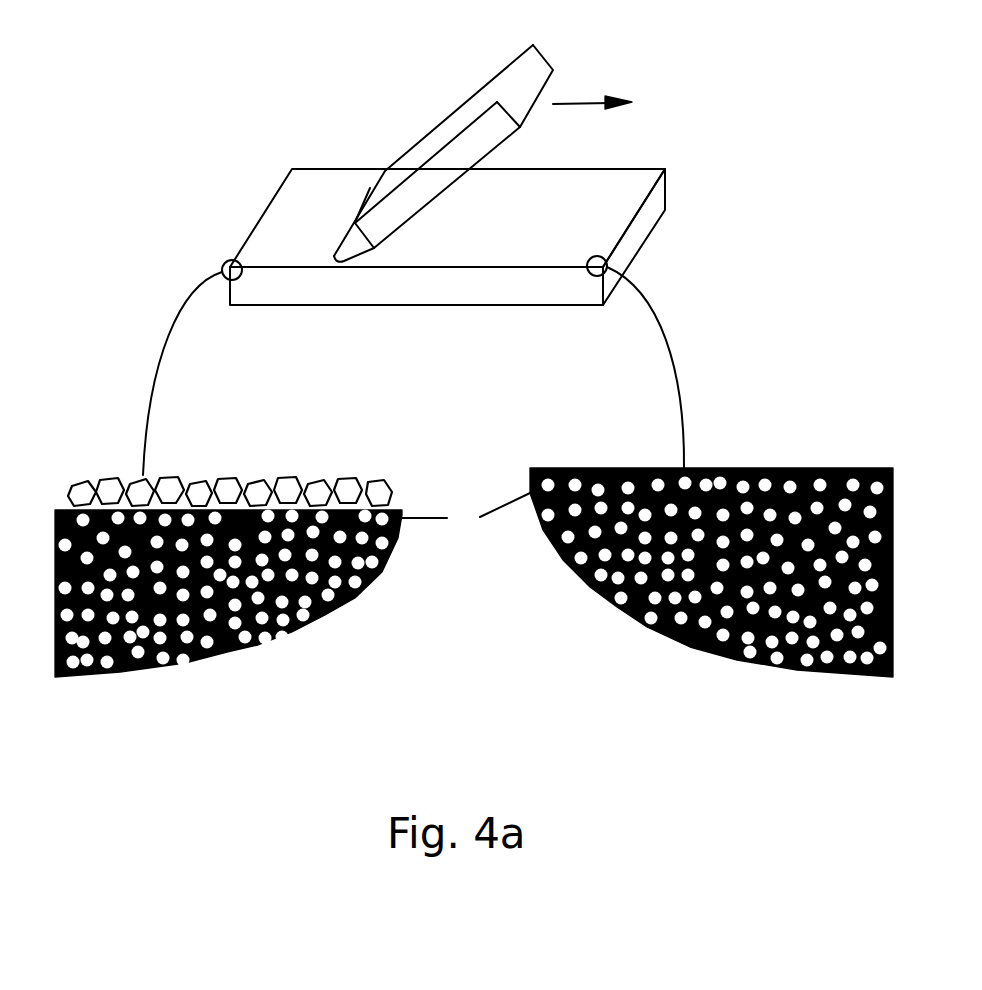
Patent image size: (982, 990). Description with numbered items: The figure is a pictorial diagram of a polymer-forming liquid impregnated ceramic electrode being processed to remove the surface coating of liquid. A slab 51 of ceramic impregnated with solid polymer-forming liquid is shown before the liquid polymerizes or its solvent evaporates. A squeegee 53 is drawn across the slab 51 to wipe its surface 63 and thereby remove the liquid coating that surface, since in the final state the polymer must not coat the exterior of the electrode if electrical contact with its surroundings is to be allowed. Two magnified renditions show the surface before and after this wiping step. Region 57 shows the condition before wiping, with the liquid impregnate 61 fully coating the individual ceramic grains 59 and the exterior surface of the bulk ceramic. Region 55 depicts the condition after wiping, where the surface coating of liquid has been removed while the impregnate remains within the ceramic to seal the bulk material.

The slab 51 is at (417, 198).
The squeegee 53 is at (452, 110).
The region 55 is at (292, 558).
The region 57 is at (627, 637).
The ceramic grains 59 is at (393, 490).
The liquid impregnate 61 is at (466, 511).
The surface 63 is at (327, 218).